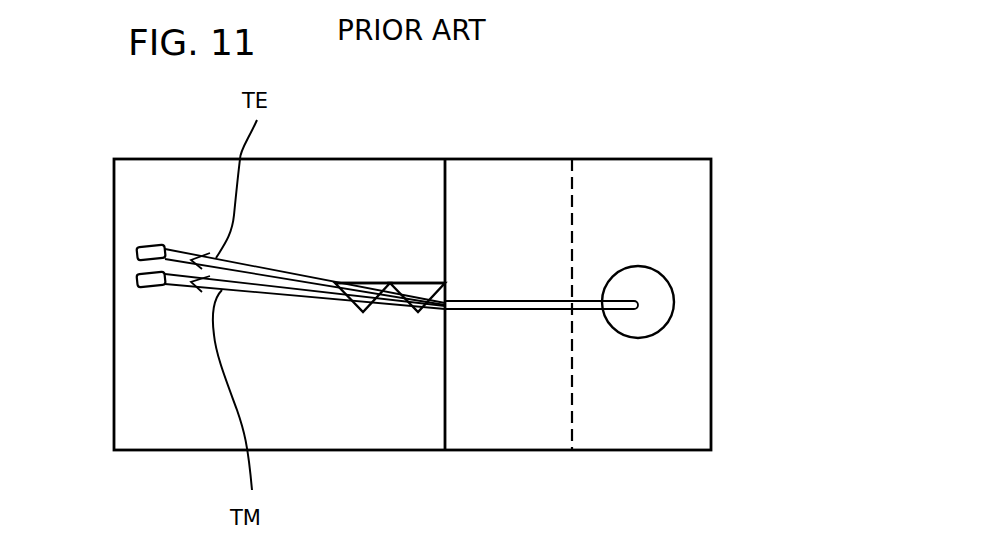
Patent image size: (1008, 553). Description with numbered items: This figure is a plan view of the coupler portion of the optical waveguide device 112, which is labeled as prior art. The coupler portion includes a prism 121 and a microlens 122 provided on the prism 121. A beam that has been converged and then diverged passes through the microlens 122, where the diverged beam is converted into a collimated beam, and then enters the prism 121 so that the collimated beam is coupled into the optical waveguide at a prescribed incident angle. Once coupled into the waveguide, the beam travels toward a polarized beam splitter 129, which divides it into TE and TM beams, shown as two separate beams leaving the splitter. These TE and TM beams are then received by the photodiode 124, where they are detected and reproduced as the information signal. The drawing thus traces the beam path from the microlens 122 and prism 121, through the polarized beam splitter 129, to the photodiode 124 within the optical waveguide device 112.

The optical waveguide device 112 is at (742, 396).
The prism 121 is at (695, 208).
The microlens 122 is at (674, 302).
The photodiode 124 is at (137, 279).
The polarized beam splitter 129 is at (428, 269).